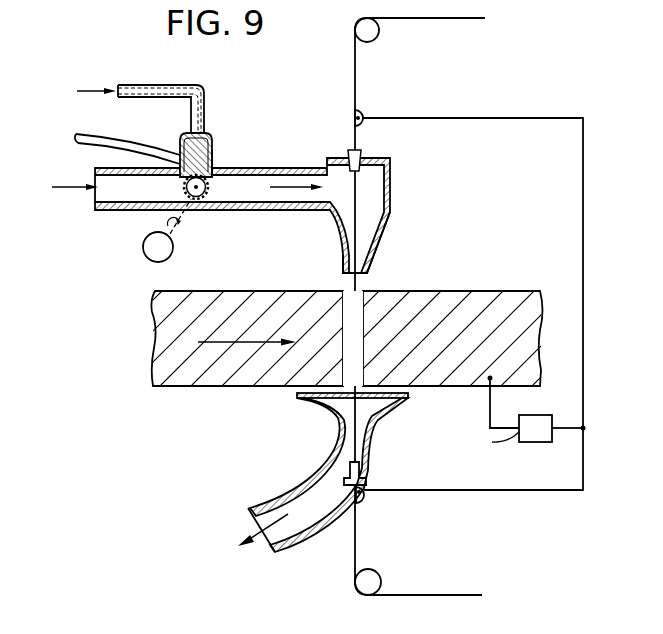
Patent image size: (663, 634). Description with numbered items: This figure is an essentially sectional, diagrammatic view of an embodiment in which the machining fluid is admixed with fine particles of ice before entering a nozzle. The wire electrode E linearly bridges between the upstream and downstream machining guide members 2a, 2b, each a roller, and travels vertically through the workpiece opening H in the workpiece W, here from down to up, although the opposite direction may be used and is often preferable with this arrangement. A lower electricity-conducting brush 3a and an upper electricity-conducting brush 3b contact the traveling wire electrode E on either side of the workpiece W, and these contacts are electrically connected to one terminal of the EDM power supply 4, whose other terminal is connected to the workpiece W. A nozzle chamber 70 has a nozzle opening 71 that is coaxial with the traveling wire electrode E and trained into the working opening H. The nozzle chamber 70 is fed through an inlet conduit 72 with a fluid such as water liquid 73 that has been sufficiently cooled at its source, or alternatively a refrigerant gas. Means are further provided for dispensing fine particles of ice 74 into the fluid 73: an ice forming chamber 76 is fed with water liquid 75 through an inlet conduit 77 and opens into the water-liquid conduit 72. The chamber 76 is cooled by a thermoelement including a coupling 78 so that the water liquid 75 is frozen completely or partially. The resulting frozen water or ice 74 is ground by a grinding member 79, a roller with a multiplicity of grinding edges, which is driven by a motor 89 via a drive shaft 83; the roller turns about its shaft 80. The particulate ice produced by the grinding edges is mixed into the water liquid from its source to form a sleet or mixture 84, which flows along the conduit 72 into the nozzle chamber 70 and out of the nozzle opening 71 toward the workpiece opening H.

The upstream machining guide member 2a is at (378, 574).
The downstream machining guide member 2b is at (378, 42).
The lower electricity-conducting brush 3a is at (370, 482).
The upper electricity-conducting brush 3b is at (364, 122).
The EDM power supply 4 is at (525, 446).
The wire electrode E is at (356, 78).
The workpiece W is at (152, 338).
The workpiece opening H is at (360, 291).
The nozzle chamber 70 is at (392, 195).
The nozzle opening 71 is at (380, 236).
The inlet conduit 72 is at (289, 210).
The water liquid 73 is at (60, 187).
The fine particles of ice 74 is at (213, 160).
The water liquid 75 is at (77, 91).
The ice forming chamber 76 is at (184, 140).
The inlet conduit 77 is at (172, 84).
The coupling 78 is at (80, 132).
The grinding member 79 is at (213, 181).
The gear shaft 80 is at (189, 188).
The drive shaft 83 is at (182, 210).
The mixture 84 is at (284, 184).
The motor 89 is at (146, 258).